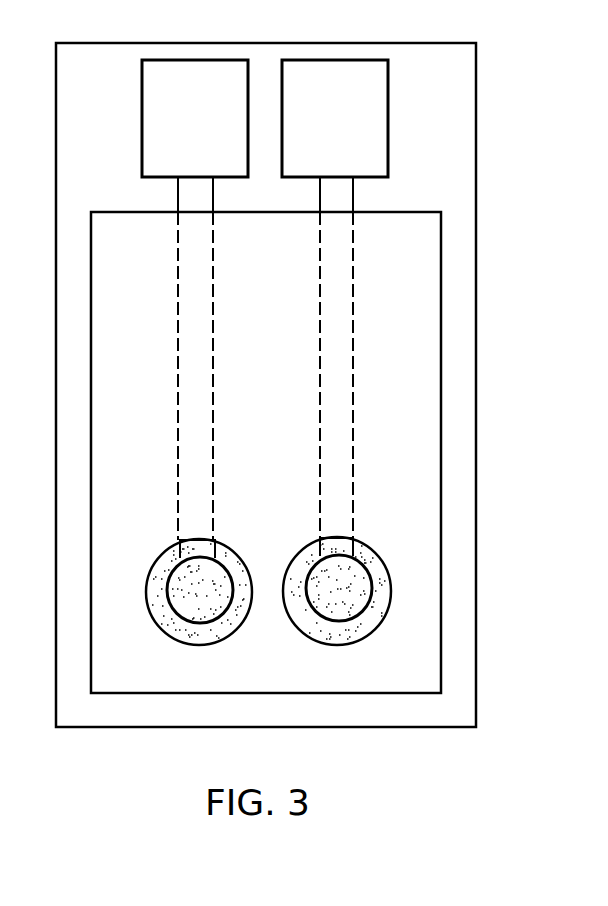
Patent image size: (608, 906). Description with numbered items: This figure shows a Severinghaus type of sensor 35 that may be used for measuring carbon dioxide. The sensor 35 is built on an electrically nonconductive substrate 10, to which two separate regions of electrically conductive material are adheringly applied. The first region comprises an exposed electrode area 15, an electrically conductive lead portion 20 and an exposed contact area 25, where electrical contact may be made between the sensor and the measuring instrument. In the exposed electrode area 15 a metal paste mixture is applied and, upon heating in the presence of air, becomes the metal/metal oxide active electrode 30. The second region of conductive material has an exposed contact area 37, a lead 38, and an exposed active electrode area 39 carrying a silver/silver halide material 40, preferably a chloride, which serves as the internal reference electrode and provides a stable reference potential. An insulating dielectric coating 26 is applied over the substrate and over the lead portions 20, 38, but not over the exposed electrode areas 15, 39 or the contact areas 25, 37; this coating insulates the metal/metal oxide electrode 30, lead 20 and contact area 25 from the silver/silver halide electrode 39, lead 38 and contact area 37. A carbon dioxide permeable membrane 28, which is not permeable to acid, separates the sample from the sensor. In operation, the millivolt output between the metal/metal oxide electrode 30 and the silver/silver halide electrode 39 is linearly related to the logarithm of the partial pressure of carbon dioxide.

The electrically nonconductive substrate 10 is at (478, 622).
The exposed electrode area 15 is at (180, 578).
The electrically conductive lead portion 20 is at (178, 318).
The exposed contact area 25 is at (205, 130).
The insulating dielectric coating 26 is at (408, 300).
The CO2 permeable membrane 28 is at (416, 353).
The metal/metal oxide active electrode 30 is at (160, 629).
The Severinghaus type sensor 35 is at (493, 97).
The exposed contact area 37 is at (345, 130).
The lead 38 is at (318, 316).
The exposed active electrode area 39 is at (366, 562).
The silver/silver halide material 40 is at (366, 626).